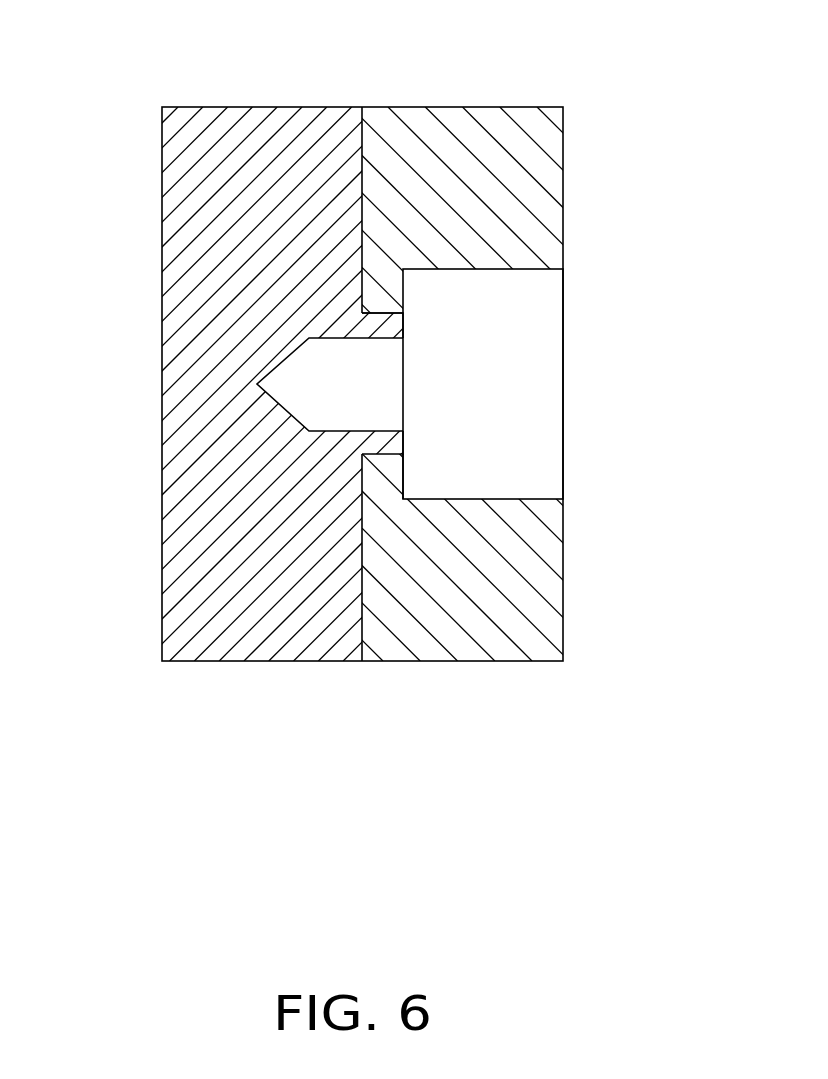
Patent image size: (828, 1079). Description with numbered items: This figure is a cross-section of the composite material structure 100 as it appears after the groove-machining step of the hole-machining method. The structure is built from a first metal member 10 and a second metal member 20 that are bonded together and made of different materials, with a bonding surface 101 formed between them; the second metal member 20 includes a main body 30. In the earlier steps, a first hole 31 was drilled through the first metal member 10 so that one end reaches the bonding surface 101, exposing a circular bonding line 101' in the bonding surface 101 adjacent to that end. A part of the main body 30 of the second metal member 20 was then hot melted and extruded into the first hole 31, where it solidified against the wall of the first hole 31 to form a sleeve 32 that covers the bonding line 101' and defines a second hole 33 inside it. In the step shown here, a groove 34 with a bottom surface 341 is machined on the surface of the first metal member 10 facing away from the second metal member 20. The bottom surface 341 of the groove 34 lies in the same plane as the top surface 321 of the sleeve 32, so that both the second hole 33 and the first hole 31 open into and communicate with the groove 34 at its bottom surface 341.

The composite material structure 100 is at (290, 63).
The first metal member 10 is at (413, 148).
The second metal member 20 is at (291, 148).
The main body 30 is at (192, 550).
The first hole 31 is at (384, 453).
The sleeve 32 is at (375, 323).
The top surface 321 is at (406, 316).
The second hole 33 is at (300, 381).
The groove 34 is at (525, 372).
The bottom surface 341 is at (405, 477).
The bonding surface 101 is at (507, 557).
The bonding line 101' is at (510, 210).